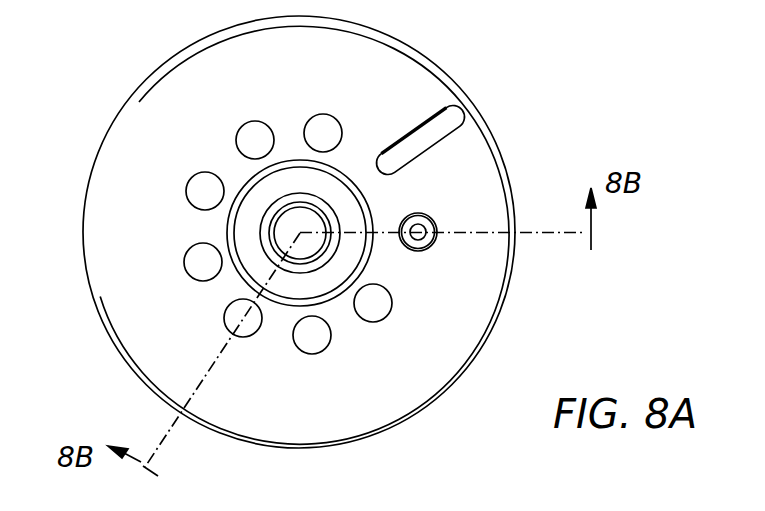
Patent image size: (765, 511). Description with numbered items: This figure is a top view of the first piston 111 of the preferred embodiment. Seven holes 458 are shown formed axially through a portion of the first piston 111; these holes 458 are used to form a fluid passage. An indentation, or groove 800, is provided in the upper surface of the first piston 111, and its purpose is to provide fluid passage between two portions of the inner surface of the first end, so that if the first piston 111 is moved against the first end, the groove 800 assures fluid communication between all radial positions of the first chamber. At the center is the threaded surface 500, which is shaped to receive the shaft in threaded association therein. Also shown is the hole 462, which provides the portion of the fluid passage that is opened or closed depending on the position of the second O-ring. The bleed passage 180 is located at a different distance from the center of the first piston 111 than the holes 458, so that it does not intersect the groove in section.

The first piston 111 is at (215, 52).
The holes 458 is at (253, 142).
The hole 462 is at (296, 210).
The threaded surface 500 is at (358, 199).
The groove 800 is at (446, 114).
The bleed passage 180 is at (418, 250).